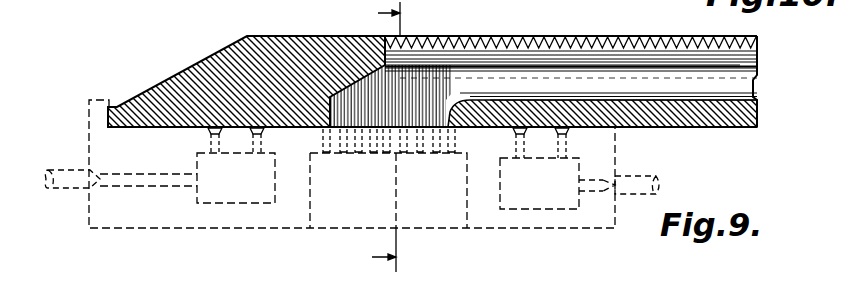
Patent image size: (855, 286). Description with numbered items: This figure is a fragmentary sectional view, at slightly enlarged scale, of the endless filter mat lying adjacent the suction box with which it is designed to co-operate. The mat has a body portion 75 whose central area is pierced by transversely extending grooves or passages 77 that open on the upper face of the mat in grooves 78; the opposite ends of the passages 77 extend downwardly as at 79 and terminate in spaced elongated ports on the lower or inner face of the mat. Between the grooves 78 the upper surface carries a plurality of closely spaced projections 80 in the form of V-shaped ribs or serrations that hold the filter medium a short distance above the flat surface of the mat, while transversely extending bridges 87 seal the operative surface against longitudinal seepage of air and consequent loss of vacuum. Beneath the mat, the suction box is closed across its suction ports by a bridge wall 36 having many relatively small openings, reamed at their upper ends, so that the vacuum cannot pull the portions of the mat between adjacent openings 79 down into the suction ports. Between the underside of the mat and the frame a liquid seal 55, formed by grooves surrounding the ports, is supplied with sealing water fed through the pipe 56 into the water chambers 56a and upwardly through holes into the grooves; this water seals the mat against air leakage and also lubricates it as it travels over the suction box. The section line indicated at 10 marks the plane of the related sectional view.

The body portion 75 is at (277, 47).
The downwardly extending ends of passages 79 is at (398, 115).
The projections 80 is at (540, 39).
The transversely extending bridges 87 is at (562, 39).
The grooves 78 is at (630, 63).
The transversely extending grooves or passages 77 is at (730, 85).
The liquid seal 55 is at (222, 138).
The bridge wall 36 is at (392, 148).
The pipe 56 is at (69, 189).
The water chambers 56a is at (248, 196).
The section line 10 is at (396, 137).